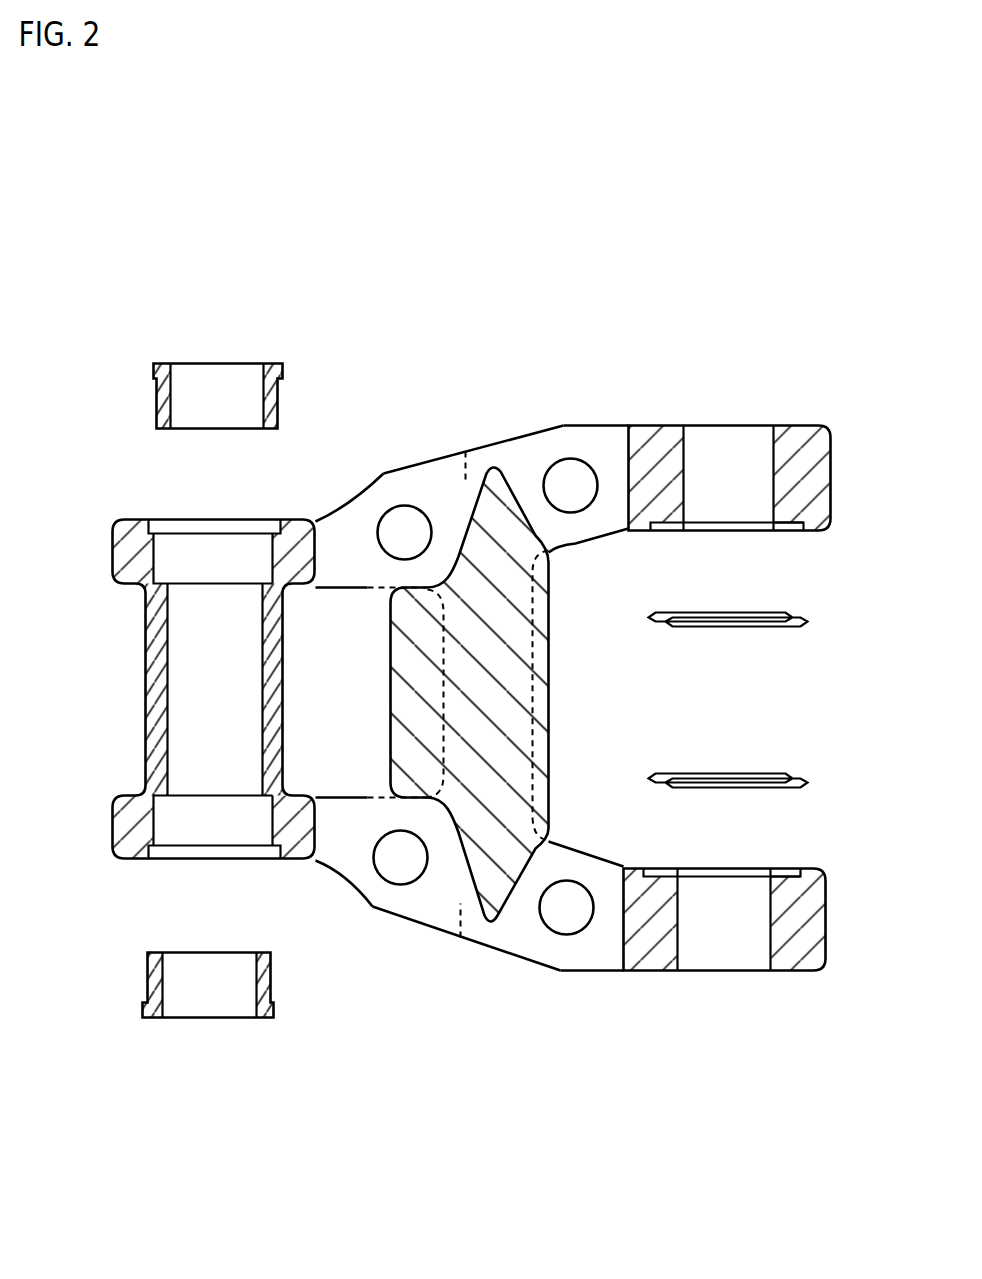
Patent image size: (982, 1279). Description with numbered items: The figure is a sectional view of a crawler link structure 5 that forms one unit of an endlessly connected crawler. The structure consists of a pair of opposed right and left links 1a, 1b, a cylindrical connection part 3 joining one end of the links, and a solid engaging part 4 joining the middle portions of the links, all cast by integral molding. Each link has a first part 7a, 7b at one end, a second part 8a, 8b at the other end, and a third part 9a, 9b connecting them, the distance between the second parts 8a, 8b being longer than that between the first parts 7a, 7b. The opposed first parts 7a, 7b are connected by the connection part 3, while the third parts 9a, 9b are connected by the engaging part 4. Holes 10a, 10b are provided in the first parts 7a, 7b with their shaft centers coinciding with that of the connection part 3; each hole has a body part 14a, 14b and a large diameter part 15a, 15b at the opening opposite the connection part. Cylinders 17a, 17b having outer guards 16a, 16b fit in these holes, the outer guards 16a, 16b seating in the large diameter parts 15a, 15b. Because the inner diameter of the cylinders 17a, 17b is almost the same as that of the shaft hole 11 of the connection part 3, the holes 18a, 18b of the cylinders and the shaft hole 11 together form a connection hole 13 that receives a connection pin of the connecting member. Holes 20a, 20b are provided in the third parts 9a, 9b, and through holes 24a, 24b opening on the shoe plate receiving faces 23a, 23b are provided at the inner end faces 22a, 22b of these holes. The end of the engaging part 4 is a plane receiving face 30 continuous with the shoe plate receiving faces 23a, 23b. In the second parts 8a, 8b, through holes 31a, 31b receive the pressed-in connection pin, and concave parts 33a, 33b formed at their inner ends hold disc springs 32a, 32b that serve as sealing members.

The link 1a is at (484, 468).
The link 1b is at (482, 925).
The cylindrical connection part 3 is at (140, 722).
The engaging part 4 is at (492, 694).
The crawler link structure 5 is at (581, 674).
The first part 7a is at (134, 519).
The first part 7b is at (129, 858).
The second part 8a is at (738, 476).
The second part 8b is at (733, 931).
The third part 9a is at (383, 490).
The third part 9b is at (379, 895).
The hole 10a is at (158, 564).
The hole 10b is at (155, 809).
The shaft hole 11 is at (170, 650).
The connection hole 13 is at (252, 676).
The body part 14a is at (270, 546).
The body part 14b is at (266, 834).
The large diameter part 15a is at (157, 530).
The large diameter part 15b is at (153, 862).
The outer guard 16a is at (153, 368).
The outer guard 16b is at (142, 1010).
The cylinder 17a is at (167, 349).
The cylinder 17b is at (159, 1034).
The hole 18a is at (260, 398).
The hole 18b is at (258, 992).
The hole 20a is at (513, 439).
The hole 20b is at (508, 950).
The inner end face 22a is at (600, 424).
The inner end face 22b is at (597, 972).
The shoe plate receiving face 23a is at (465, 449).
The shoe plate receiving face 23b is at (460, 938).
The through hole 24a is at (572, 478).
The through hole 24b is at (390, 846).
The plane receiving face 30 is at (457, 680).
The through hole 31a is at (775, 503).
The through hole 31b is at (758, 900).
The disc spring 32a is at (790, 628).
The disc spring 32b is at (665, 772).
The concave part 33a is at (790, 533).
The concave part 33b is at (790, 870).